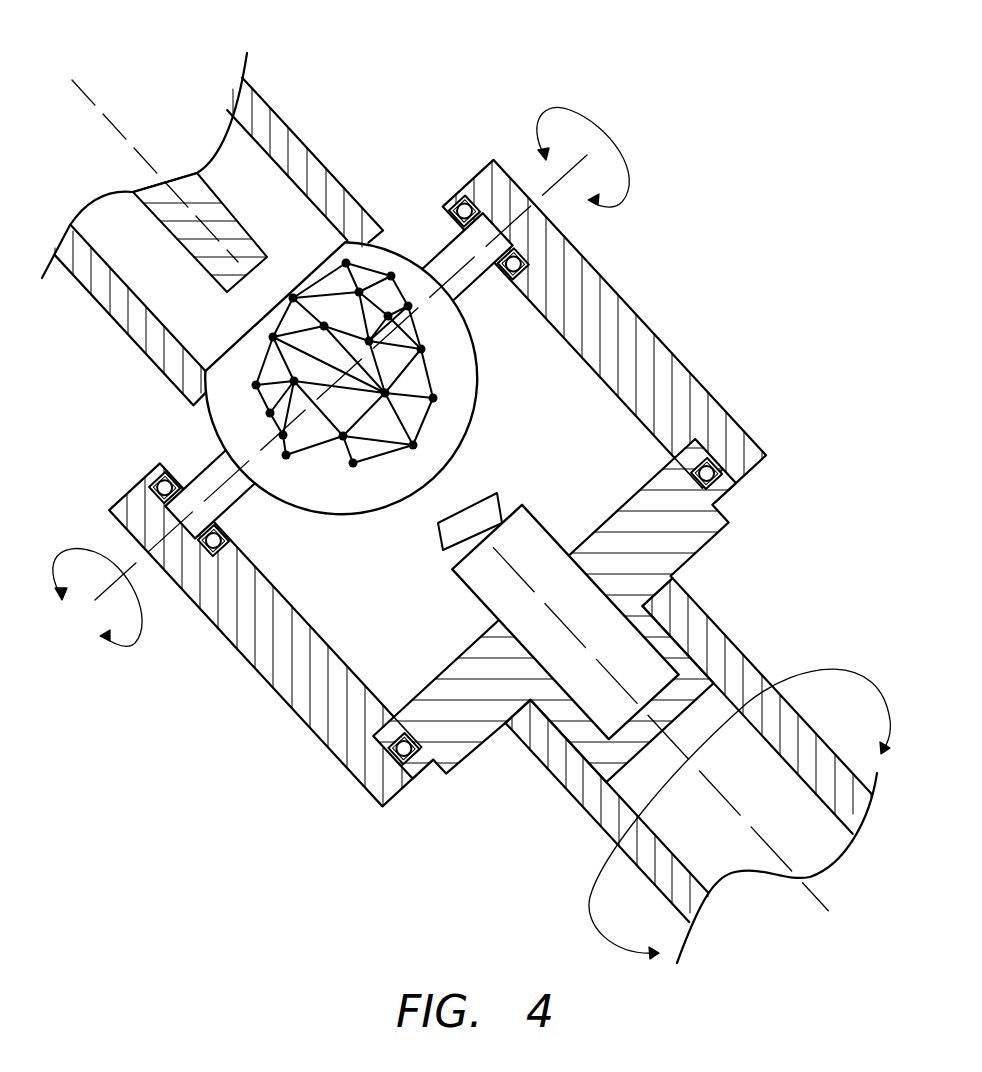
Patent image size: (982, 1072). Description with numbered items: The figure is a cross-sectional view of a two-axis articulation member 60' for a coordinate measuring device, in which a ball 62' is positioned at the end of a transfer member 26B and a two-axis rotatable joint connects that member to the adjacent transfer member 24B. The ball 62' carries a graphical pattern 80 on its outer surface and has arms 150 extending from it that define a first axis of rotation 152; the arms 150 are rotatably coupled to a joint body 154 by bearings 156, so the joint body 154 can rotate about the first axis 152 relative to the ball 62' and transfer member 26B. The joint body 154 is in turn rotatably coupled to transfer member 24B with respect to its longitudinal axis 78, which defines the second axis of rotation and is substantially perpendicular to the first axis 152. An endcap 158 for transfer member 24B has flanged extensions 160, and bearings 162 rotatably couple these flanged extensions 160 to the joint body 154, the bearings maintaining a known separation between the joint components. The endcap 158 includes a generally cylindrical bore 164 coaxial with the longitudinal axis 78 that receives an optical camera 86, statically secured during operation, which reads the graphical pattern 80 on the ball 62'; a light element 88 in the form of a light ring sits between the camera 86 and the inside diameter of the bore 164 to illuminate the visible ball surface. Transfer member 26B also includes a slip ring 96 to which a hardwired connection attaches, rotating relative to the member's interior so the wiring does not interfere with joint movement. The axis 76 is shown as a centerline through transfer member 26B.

The longitudinal axis 76 is at (84, 88).
The slip ring 96 is at (217, 172).
The transfer member 26B is at (290, 140).
The graphical pattern 80 is at (405, 277).
The bearings 156 is at (513, 252).
The arms 150 is at (543, 297).
The two-axis articulation member 60' is at (604, 331).
The ball 62' is at (314, 392).
The first axis of rotation 152 is at (130, 565).
The joint body 154 is at (233, 612).
The bearings 162 is at (724, 474).
The flanged extensions 160 is at (657, 487).
The light element 88 is at (478, 493).
The bore 164 is at (553, 543).
The endcap 158 is at (700, 553).
The optical camera 86 is at (632, 667).
The transfer member 24B is at (732, 670).
The longitudinal axis 78 is at (830, 912).